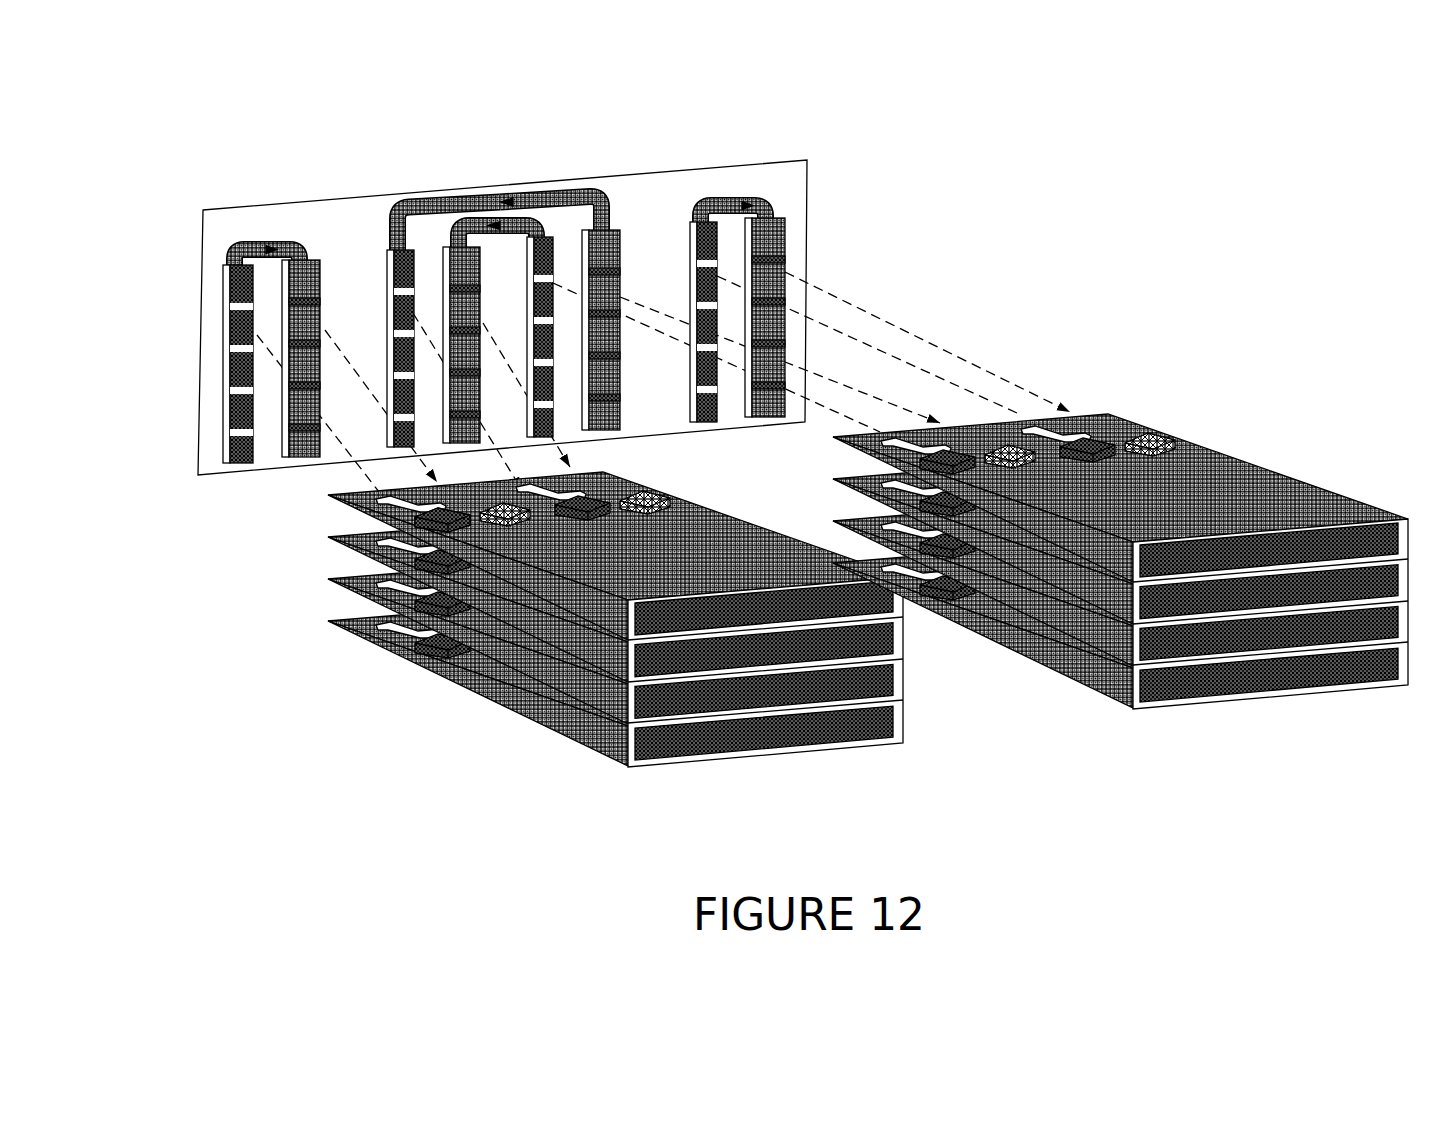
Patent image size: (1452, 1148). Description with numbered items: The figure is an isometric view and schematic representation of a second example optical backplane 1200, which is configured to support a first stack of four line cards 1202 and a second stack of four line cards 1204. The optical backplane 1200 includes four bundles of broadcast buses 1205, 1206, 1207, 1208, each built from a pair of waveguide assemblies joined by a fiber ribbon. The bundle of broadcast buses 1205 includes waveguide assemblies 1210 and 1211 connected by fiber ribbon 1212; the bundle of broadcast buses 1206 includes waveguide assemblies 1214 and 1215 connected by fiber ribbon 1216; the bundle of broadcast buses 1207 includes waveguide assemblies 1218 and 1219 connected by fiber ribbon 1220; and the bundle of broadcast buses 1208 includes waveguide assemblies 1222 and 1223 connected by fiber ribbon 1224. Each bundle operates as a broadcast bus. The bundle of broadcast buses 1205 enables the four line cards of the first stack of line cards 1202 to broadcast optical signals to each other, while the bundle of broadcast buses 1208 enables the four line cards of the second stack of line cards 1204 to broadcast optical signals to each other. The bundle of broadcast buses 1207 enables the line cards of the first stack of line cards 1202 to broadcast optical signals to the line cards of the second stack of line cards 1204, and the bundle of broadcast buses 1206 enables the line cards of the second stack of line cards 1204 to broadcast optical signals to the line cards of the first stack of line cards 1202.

The optical backplane 1200 is at (741, 124).
The first stack of four line cards 1202 is at (609, 638).
The second stack of four line cards 1204 is at (1270, 440).
The bundle of broadcast buses 1205 is at (259, 331).
The bundle of broadcast buses 1206 is at (521, 294).
The bundle of broadcast buses 1207 is at (518, 181).
The bundle of broadcast buses 1208 is at (807, 342).
The waveguide assembly 1210 is at (240, 457).
The waveguide assembly 1211 is at (300, 452).
The fiber ribbon 1212 is at (284, 242).
The waveguide assembly 1214 is at (528, 430).
The waveguide assembly 1215 is at (432, 480).
The fiber ribbon 1216 is at (513, 237).
The waveguide assembly 1218 is at (386, 437).
The waveguide assembly 1219 is at (617, 417).
The fiber ribbon 1220 is at (452, 201).
The waveguide assembly 1222 is at (710, 423).
The waveguide assembly 1223 is at (768, 414).
The fiber ribbon 1224 is at (724, 204).